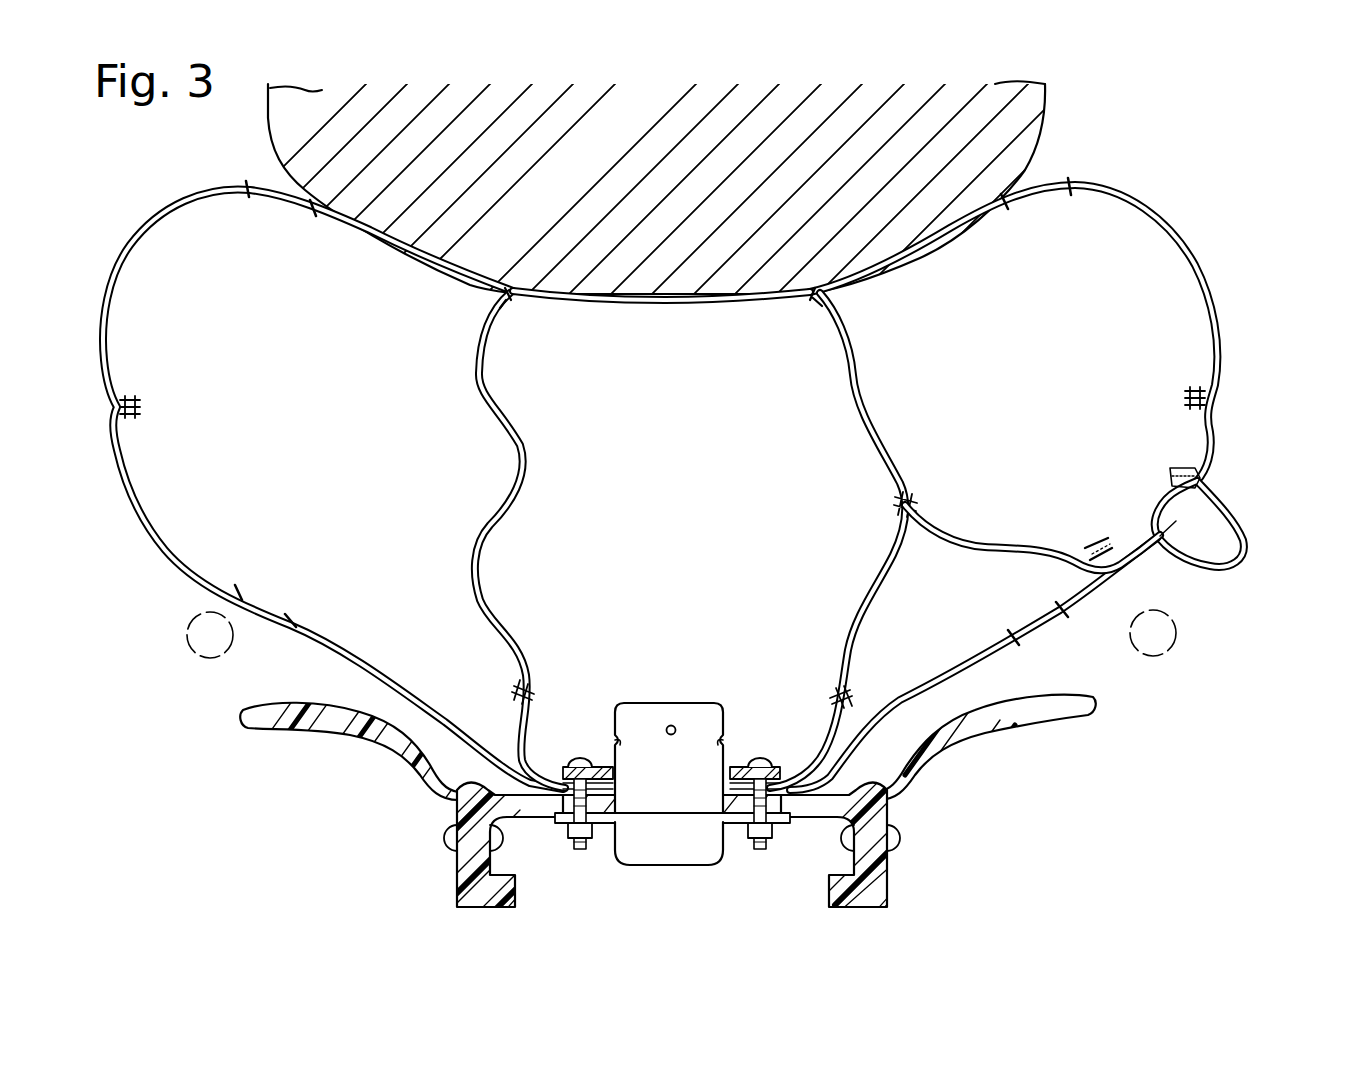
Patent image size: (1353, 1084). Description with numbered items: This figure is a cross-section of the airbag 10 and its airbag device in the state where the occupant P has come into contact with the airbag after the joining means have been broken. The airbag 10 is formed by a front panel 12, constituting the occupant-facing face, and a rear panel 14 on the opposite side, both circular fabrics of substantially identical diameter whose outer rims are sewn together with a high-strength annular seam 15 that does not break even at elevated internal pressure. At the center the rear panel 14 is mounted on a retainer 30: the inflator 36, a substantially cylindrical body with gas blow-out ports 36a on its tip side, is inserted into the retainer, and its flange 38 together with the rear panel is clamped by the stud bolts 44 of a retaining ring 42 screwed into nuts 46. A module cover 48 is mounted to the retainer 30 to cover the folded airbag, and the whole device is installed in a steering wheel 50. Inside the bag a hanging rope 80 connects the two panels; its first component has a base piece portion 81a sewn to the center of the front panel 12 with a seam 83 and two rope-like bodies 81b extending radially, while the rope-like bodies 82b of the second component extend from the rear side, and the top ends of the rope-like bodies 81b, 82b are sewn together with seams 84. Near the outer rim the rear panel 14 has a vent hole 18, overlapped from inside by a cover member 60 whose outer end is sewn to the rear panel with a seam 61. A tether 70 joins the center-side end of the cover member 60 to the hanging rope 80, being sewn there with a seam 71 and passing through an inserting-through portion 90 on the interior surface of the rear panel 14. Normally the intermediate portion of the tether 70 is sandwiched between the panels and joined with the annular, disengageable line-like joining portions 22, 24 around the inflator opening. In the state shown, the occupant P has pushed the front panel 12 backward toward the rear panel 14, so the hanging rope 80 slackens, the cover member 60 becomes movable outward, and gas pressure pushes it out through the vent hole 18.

The occupant P is at (1043, 105).
The airbag 10 is at (708, 470).
The front panel 12 is at (1222, 325).
The rear panel 14 is at (157, 530).
The seam 15 is at (130, 400).
The vent hole 18 is at (1158, 510).
The line-like joining portion 22 is at (313, 210).
The line-like joining portion 24 is at (248, 192).
The retainer 30 is at (885, 805).
The inflator 36 is at (686, 862).
The gas blow-out ports 36a is at (614, 738).
The flange 38 is at (632, 825).
The retaining ring 42 is at (748, 764).
The stud bolts 44 is at (580, 850).
The nuts 46 is at (566, 832).
The module cover 48 is at (272, 726).
The steering wheel 50 is at (216, 658).
The cover member 60 is at (1246, 535).
The seam 61 is at (1204, 470).
The tether 70 is at (990, 545).
The seam 71 is at (926, 470).
The hanging rope 80 is at (677, 538).
The base piece portion 81a is at (668, 303).
The rope-like bodies 81b is at (512, 392).
The rope-like bodies 82b is at (518, 740).
The seam 83 is at (520, 302).
The seams 84 is at (520, 690).
The inserting-through portion 90 is at (1108, 540).